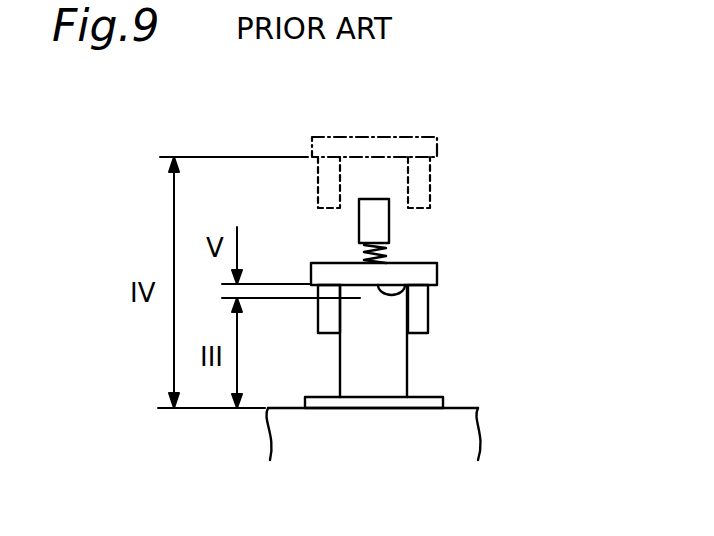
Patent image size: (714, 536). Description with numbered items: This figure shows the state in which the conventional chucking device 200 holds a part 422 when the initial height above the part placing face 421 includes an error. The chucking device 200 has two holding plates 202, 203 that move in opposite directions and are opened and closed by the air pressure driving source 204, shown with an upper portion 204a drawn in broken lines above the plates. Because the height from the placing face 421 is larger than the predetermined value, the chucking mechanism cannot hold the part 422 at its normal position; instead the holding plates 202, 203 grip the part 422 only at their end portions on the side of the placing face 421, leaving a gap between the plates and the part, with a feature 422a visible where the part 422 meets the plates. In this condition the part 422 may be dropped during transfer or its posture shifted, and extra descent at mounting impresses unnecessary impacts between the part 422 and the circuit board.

The chucking device 200 is at (466, 268).
The holding plate 202 is at (318, 313).
The holding plate 203 is at (430, 310).
The air pressure driving source 204 is at (410, 262).
The head portion 204a is at (433, 162).
The placing face 421 is at (462, 408).
The part 422 is at (380, 368).
The groove 422a is at (360, 298).